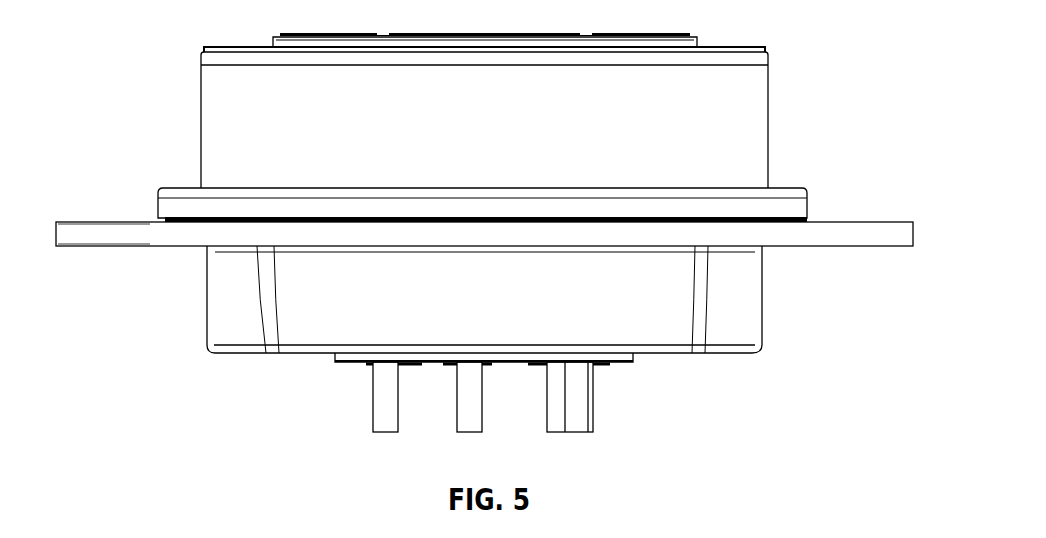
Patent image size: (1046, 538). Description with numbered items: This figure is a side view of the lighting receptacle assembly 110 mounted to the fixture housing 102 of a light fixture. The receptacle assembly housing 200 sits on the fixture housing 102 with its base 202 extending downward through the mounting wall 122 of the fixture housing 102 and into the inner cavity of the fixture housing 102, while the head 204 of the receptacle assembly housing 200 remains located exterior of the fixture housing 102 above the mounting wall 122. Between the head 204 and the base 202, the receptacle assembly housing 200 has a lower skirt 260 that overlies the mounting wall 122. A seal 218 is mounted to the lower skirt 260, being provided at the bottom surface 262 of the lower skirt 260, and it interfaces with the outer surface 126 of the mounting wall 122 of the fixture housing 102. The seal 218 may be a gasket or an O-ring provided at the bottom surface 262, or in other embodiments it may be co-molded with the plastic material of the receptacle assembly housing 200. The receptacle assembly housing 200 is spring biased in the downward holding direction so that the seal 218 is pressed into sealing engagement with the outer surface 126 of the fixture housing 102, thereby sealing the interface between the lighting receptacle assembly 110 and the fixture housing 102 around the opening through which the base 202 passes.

The lighting receptacle assembly 110 is at (775, 96).
The receptacle assembly housing 200 is at (218, 110).
The head 204 is at (228, 65).
The lower skirt 260 is at (802, 206).
The bottom surface 262 is at (780, 223).
The fixture housing 102 is at (881, 218).
The mounting wall 122 is at (130, 233).
The outer surface 126 is at (122, 222).
The seal 218 is at (194, 225).
The base 202 is at (350, 357).